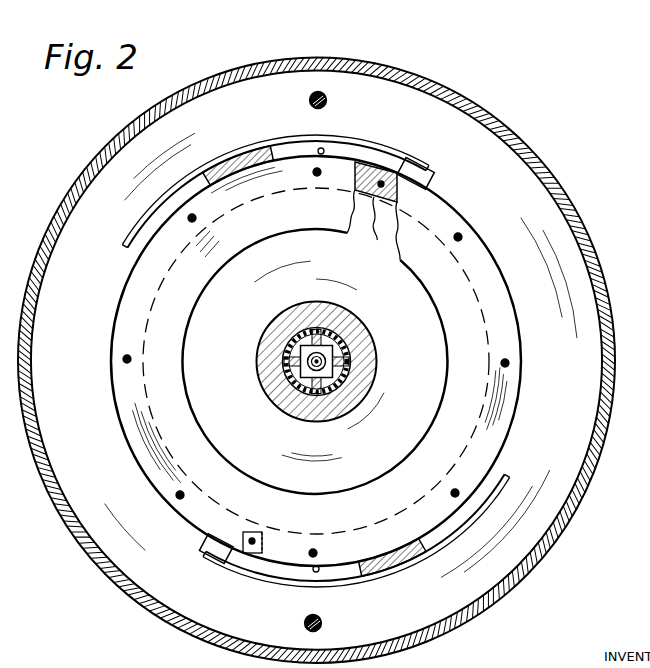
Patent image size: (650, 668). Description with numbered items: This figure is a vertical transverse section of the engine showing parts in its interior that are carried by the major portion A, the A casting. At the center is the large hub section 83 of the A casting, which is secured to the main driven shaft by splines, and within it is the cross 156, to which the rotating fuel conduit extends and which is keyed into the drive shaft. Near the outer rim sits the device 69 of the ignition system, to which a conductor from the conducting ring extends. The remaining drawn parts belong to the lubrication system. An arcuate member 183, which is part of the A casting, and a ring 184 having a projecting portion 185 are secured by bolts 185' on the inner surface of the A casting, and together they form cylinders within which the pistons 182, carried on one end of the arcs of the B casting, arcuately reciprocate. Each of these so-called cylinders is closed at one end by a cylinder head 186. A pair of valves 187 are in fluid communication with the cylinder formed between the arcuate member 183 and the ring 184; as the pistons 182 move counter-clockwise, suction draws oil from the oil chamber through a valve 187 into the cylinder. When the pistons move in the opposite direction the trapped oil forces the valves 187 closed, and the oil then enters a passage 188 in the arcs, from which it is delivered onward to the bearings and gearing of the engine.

The major portion A is at (95, 163).
The device 69 is at (326, 98).
The hub section 83 is at (288, 416).
The cross 156 is at (345, 346).
The piston 182 is at (263, 131).
The arcuate member 183 is at (190, 162).
The ring 184 is at (300, 218).
The projecting portion 185 is at (316, 340).
The bolts 185' is at (323, 362).
The cylinder head 186 is at (426, 172).
The valve 187 is at (366, 218).
The passage 188 is at (323, 151).